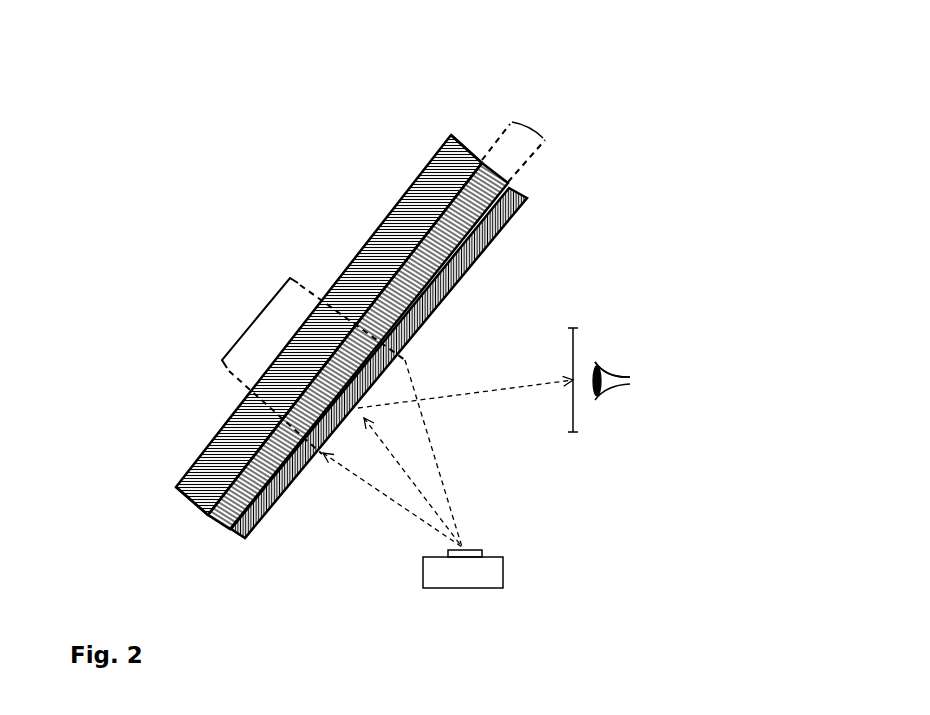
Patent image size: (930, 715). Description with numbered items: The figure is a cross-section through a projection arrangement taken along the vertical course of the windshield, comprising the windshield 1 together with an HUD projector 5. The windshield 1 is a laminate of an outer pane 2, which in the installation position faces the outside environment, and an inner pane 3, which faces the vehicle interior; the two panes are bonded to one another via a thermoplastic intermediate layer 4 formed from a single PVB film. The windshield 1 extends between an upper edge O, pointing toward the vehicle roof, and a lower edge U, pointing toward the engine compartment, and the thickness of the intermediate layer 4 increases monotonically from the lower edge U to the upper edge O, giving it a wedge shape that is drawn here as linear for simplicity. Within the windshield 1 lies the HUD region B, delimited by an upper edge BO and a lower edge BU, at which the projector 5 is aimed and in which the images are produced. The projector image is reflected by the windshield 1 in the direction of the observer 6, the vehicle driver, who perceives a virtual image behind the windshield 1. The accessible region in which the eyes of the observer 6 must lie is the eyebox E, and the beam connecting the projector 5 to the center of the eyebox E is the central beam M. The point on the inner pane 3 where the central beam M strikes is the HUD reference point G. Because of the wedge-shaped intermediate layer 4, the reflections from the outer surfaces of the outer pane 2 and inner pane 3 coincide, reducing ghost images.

The windshield 1 is at (418, 118).
The outer pane 2 is at (402, 208).
The inner pane 3 is at (512, 208).
The thermoplastic intermediate layer 4 is at (508, 195).
The upper edge O is at (480, 120).
The lower edge U is at (205, 540).
The HUD region B is at (250, 315).
The upper edge of the HUD region BO is at (408, 352).
The lower edge of the HUD region BU is at (321, 457).
The HUD reference point G is at (356, 414).
The central beam M is at (518, 378).
The eyebox E is at (587, 340).
The observer 6 is at (628, 358).
The HUD projector 5 is at (483, 575).